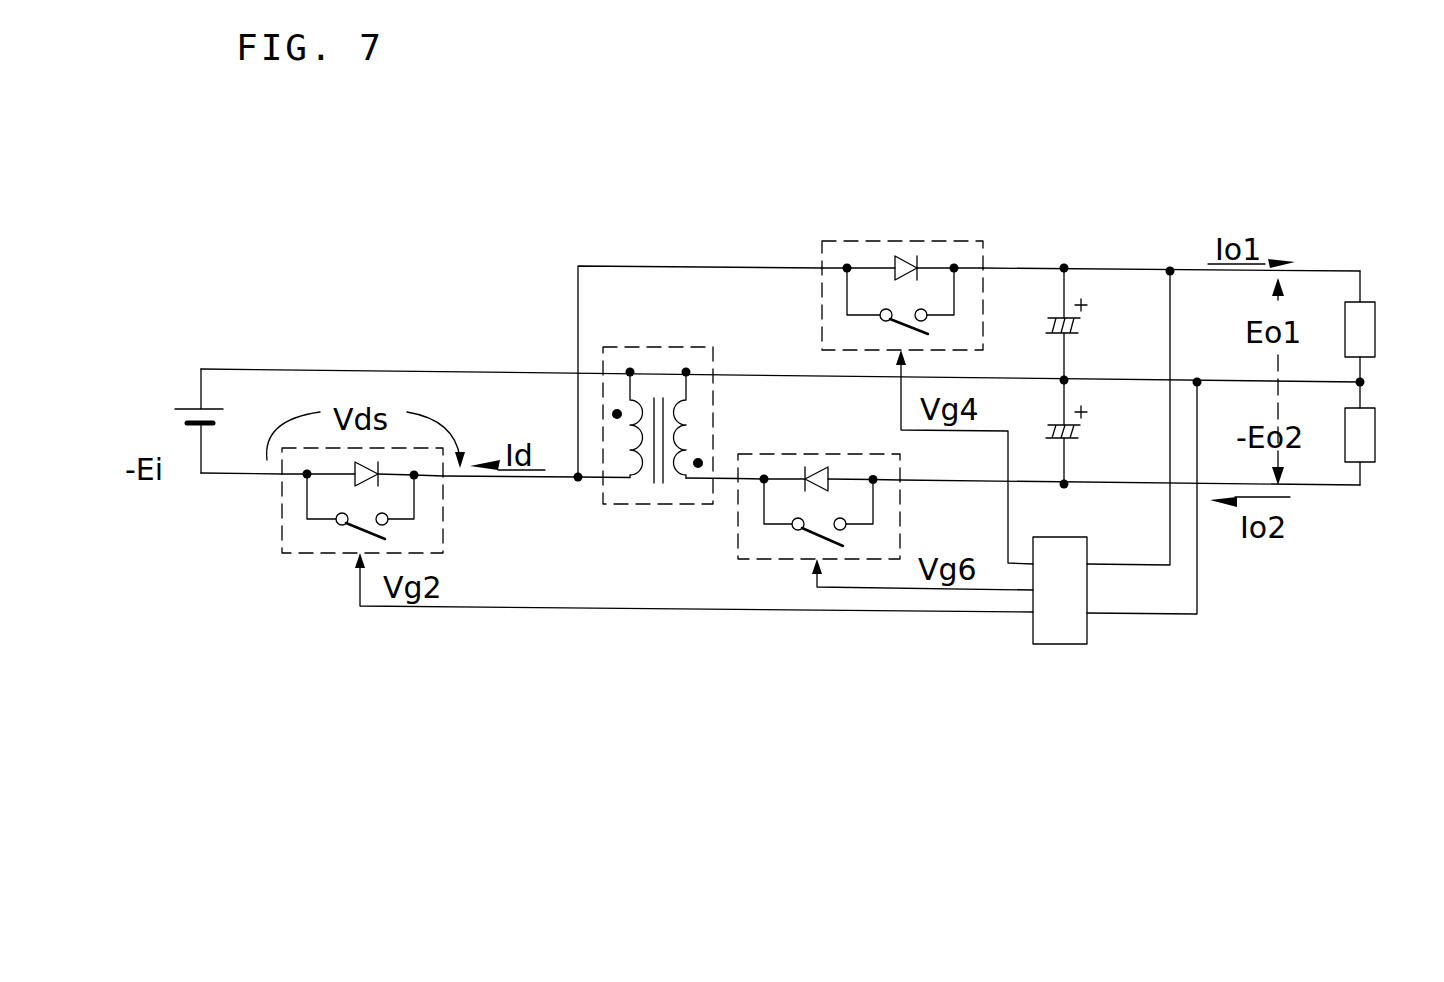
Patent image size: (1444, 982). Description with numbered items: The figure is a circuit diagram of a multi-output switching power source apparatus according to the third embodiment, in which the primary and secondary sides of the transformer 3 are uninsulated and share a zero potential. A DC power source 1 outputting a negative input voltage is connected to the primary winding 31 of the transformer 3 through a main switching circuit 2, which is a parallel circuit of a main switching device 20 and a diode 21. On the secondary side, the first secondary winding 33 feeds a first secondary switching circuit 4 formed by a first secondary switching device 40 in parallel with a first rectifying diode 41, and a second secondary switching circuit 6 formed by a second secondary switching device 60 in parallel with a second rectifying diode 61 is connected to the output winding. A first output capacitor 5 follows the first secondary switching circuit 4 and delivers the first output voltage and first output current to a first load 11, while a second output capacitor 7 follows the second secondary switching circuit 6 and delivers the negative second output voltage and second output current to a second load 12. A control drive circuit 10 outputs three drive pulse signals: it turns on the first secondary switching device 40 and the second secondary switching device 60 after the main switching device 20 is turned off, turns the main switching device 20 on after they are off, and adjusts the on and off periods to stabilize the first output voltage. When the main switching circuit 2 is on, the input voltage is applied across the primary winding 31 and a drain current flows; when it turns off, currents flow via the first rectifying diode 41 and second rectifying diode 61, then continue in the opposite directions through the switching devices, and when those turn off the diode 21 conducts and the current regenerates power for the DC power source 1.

The DC power source 1 is at (190, 402).
The main switching circuit 2 is at (445, 505).
The main switching device 20 is at (352, 537).
The diode 21 is at (340, 478).
The transformer 3 is at (660, 347).
The primary winding 31 is at (620, 440).
The first secondary winding 33 is at (697, 418).
The first secondary switching circuit 4 is at (985, 252).
The first secondary switching device 40 is at (905, 310).
The first rectifying diode 41 is at (900, 258).
The first output capacitor 5 is at (1085, 325).
The second secondary switching circuit 6 is at (850, 454).
The second secondary switching device 60 is at (812, 538).
The second rectifying diode 61 is at (800, 465).
The second output capacitor 7 is at (1082, 434).
The control drive circuit 10 is at (1090, 545).
The first load 11 is at (1378, 318).
The second load 12 is at (1378, 430).